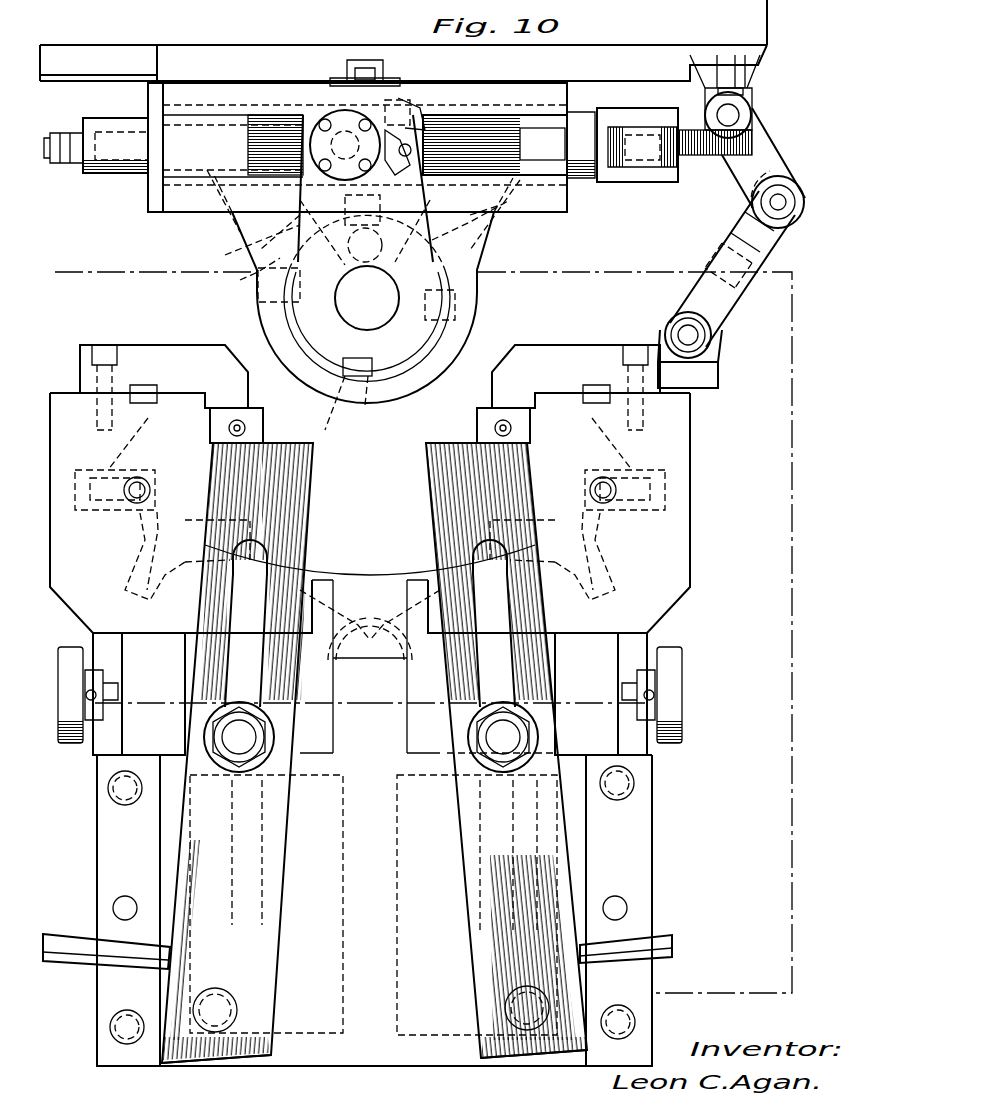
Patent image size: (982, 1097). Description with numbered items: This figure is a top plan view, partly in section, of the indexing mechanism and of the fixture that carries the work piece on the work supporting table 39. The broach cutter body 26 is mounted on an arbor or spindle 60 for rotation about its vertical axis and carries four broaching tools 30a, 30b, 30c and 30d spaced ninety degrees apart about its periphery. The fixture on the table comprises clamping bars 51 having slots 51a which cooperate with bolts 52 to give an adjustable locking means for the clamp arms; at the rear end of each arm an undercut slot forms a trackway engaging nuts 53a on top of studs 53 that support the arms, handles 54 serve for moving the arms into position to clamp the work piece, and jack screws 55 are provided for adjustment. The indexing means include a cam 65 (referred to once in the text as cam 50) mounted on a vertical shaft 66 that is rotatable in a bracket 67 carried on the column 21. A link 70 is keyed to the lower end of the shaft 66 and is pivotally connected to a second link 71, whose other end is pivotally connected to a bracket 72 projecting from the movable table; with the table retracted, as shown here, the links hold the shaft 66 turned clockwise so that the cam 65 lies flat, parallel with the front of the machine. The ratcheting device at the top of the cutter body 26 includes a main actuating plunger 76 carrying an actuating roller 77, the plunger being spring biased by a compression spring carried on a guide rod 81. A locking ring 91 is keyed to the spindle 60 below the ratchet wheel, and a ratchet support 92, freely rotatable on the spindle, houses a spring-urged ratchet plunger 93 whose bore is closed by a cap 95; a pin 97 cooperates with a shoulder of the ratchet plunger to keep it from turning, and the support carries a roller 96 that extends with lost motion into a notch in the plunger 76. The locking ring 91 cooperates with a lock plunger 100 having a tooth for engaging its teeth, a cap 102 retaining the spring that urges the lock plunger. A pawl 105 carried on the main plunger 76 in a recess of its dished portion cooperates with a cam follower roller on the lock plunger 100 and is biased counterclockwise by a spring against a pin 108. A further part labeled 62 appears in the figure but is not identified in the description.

The vertical frame or column 21 is at (173, 63).
The broach cutter body 26 is at (268, 321).
The arbor or spindle 60 is at (384, 313).
The broaching tool 30a is at (260, 299).
The broaching tool 30b is at (352, 392).
The broaching tool 30c is at (470, 289).
The broaching tool 30d is at (488, 232).
The cylinder 62 is at (124, 172).
The guide rod 81 is at (56, 163).
The pin 97 is at (275, 145).
The roller 96 is at (287, 112).
The lock plunger 100 is at (332, 116).
The cap 102 is at (386, 70).
The cap 95 is at (405, 112).
The pawl 105 is at (495, 145).
The pin 108 is at (505, 149).
The main actuating plunger 76 is at (586, 180).
The actuating roller 77 is at (647, 172).
The cam 65 is at (706, 158).
The vertical shaft 66 is at (740, 116).
The bracket 67 is at (748, 78).
The link 70 is at (770, 153).
The second link 71 is at (770, 243).
The bracket 72 is at (712, 356).
The ratchet support 92 is at (248, 246).
The locking ring 91 is at (246, 274).
The ratchet plunger 93 is at (471, 221).
The cam 50 is at (145, 536).
The jack screws 55 is at (68, 648).
The work supporting table 39 is at (760, 806).
The clamping bars 51 is at (183, 878).
The slots 51a is at (565, 669).
The bolts 52 is at (239, 738).
The nuts 53a is at (235, 986).
The studs 53 is at (203, 1052).
The handles 54 is at (80, 963).